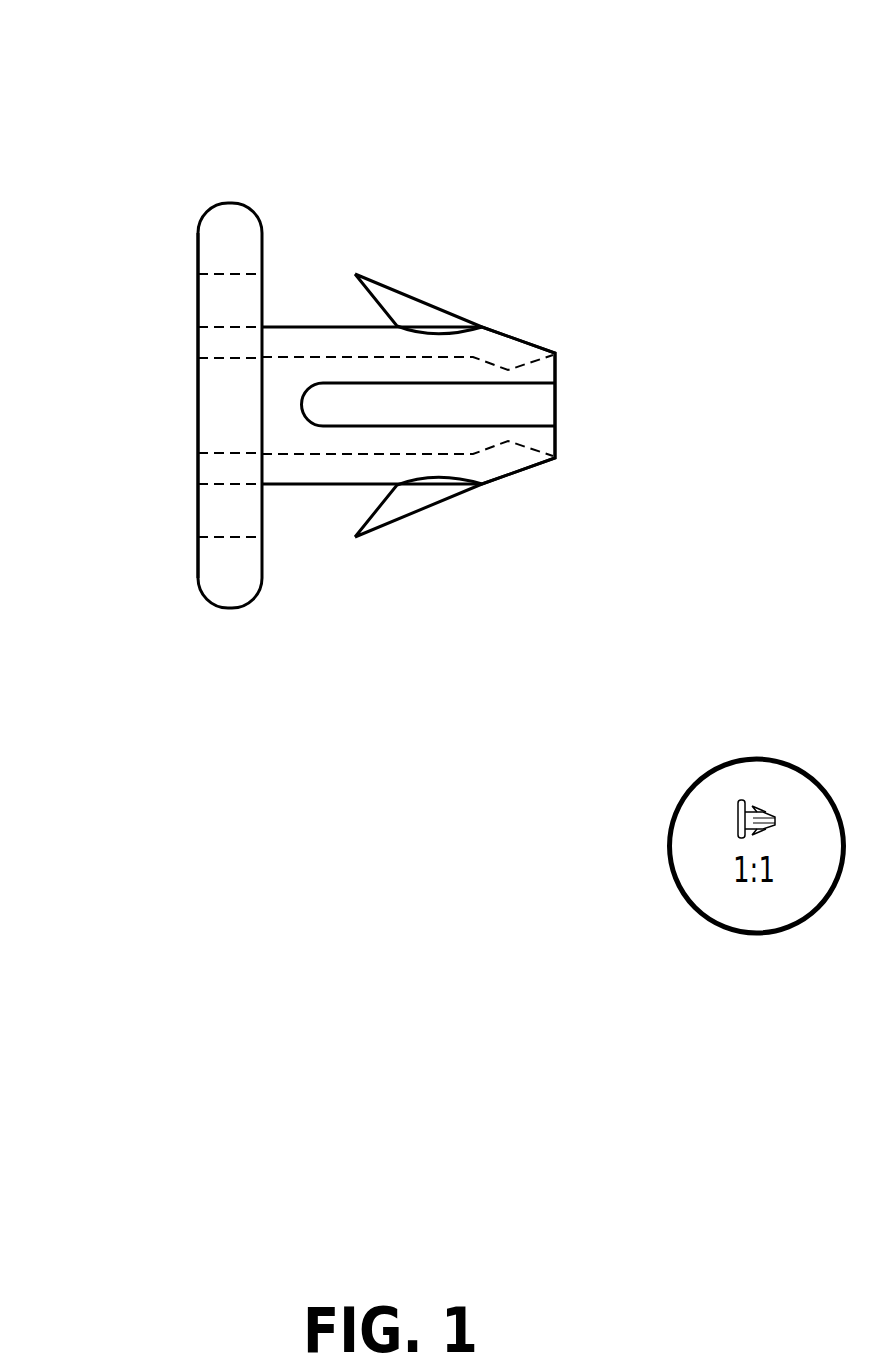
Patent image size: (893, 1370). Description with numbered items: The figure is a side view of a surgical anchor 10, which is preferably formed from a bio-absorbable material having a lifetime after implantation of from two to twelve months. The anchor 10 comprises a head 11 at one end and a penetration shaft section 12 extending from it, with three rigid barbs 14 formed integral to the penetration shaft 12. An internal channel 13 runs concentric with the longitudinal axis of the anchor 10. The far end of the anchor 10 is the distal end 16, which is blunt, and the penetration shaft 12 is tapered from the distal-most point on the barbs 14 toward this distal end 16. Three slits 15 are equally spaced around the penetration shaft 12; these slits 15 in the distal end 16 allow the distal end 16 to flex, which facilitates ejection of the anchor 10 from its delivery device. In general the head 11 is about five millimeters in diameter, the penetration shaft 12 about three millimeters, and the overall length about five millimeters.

The anchor 10 is at (312, 117).
The head 11 is at (227, 600).
The penetration shaft section 12 is at (313, 328).
The internal channel 13 is at (198, 413).
The rigid barbs 14 is at (425, 313).
The slits 15 is at (538, 400).
The distal end 16 is at (557, 435).